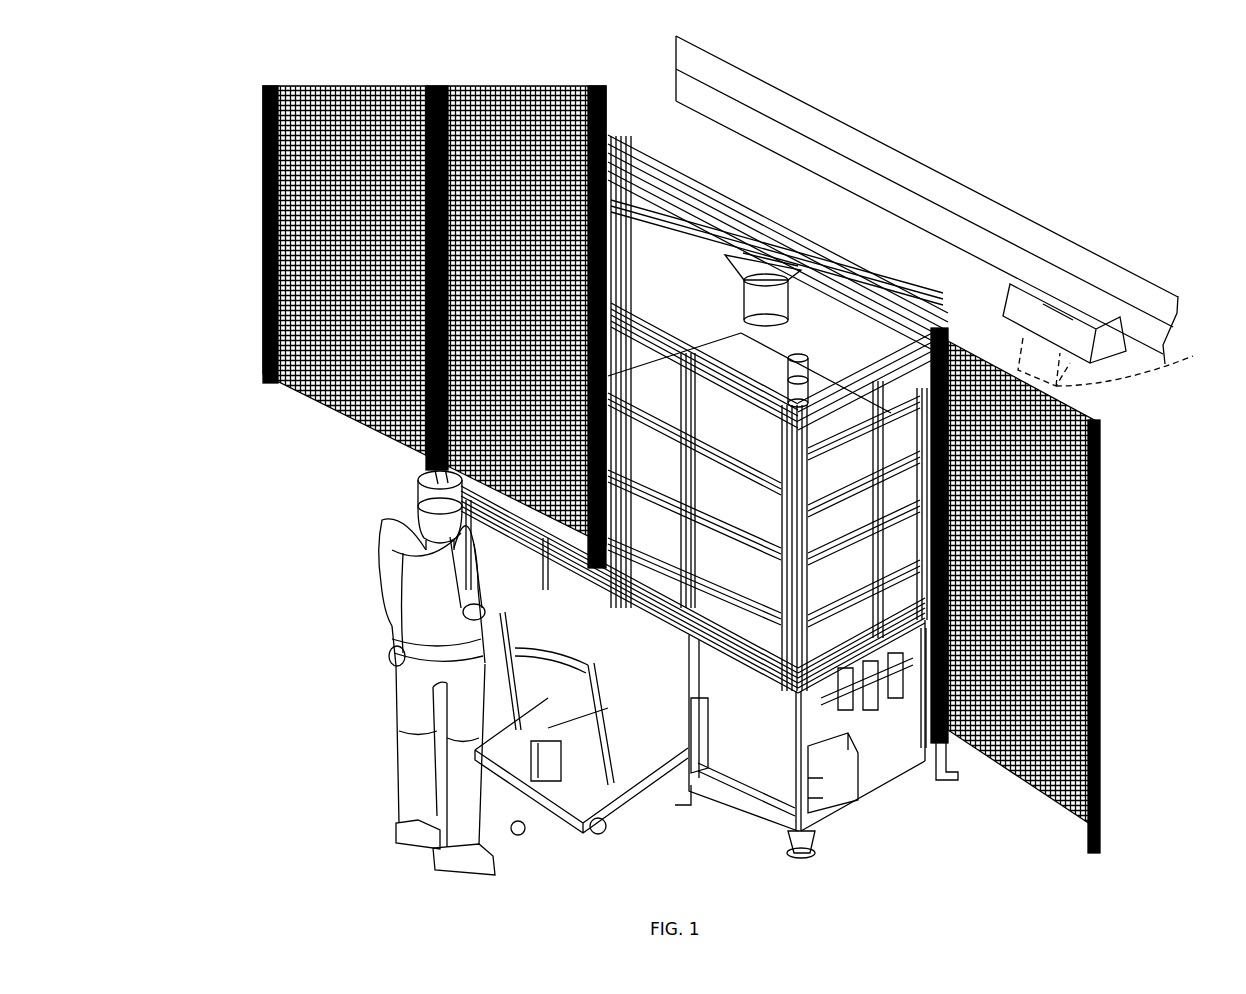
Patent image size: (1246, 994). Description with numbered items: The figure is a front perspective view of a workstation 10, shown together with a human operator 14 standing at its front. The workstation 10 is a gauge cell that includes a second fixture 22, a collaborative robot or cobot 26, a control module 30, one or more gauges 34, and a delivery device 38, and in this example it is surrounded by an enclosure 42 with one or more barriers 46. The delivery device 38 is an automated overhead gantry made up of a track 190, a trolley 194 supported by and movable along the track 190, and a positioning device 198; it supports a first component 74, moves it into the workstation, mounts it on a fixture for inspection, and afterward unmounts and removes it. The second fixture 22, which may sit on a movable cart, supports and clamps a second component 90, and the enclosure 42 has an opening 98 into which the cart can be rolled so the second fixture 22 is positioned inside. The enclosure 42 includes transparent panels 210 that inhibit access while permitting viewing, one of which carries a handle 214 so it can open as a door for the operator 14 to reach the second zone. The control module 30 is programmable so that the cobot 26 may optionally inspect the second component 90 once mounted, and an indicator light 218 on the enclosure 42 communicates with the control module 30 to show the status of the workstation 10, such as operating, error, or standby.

The workstation 10 is at (903, 834).
The human operator 14 is at (376, 596).
The second fixture 22 is at (583, 660).
The cobot 26 is at (795, 222).
The control module 30 is at (508, 566).
The gauges 34 is at (1000, 650).
The delivery device 38 is at (1013, 210).
The enclosure 42 is at (618, 123).
The barriers 46 is at (258, 84).
The first component 74 is at (647, 465).
The second component 90 is at (827, 335).
The opening 98 is at (683, 693).
The track 190 is at (1075, 300).
The trolley 194 is at (1070, 320).
The positioning device 198 is at (1180, 357).
The transparent panels 210 is at (730, 618).
The handle 214 is at (851, 690).
The indicator light 218 is at (781, 348).